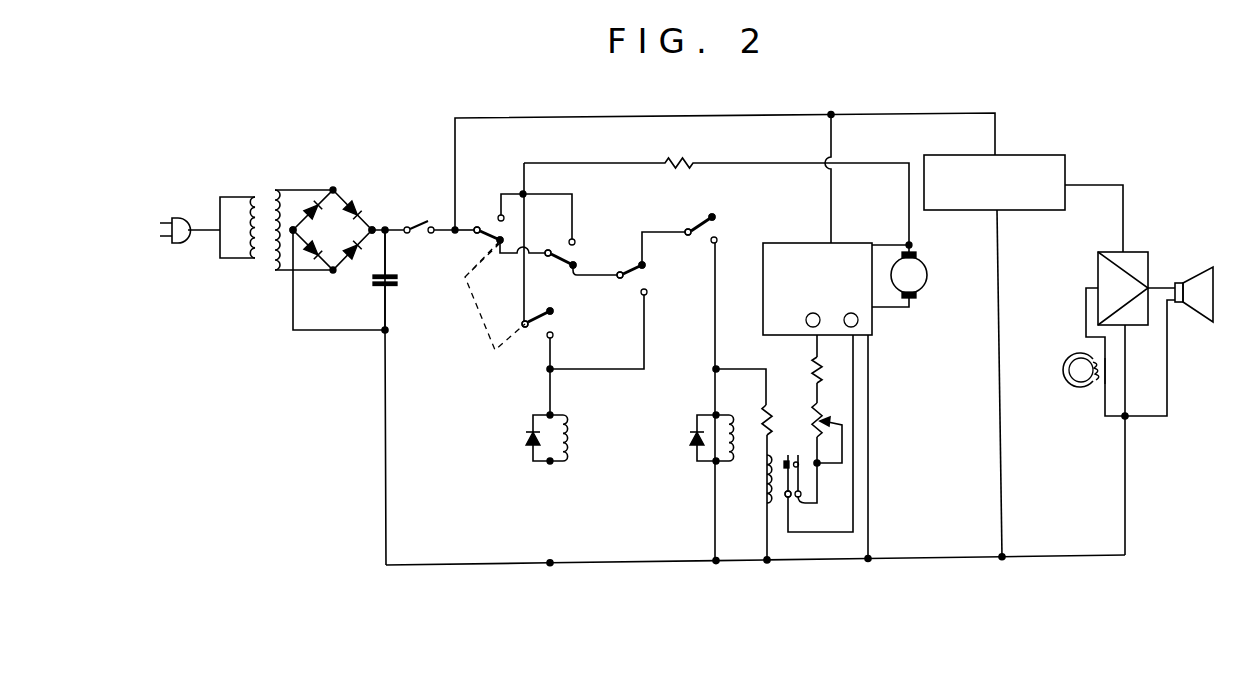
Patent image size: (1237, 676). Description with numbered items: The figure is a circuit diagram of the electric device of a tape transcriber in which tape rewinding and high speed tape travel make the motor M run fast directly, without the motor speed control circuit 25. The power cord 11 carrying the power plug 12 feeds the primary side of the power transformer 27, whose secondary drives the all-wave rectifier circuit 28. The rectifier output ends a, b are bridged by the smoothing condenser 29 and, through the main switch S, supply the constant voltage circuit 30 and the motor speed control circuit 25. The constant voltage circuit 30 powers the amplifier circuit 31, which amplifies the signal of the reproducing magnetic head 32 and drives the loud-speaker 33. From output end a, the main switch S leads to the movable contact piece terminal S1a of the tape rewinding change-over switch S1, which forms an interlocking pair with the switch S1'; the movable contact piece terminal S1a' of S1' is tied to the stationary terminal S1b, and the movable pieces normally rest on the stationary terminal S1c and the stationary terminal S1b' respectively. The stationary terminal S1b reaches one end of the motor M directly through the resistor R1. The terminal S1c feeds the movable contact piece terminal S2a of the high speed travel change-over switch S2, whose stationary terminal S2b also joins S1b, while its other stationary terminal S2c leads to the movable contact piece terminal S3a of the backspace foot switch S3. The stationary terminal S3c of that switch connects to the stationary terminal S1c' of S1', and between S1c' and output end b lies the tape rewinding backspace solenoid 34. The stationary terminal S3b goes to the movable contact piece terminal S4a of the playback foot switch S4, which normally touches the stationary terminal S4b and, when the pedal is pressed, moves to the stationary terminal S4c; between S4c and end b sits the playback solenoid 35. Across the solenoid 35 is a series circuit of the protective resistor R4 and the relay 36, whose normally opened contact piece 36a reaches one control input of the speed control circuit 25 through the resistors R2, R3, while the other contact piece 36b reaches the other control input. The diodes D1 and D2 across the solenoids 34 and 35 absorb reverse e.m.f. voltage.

The power cord 11 is at (196, 227).
The power plug 12 is at (176, 243).
The power transformer 27 is at (262, 194).
The all-wave rectifier circuit 28 is at (345, 189).
The output end a is at (375, 227).
The output end b is at (297, 231).
The smoothing condenser 29 is at (398, 287).
The main switch S is at (425, 221).
The tape rewinding operation change-over switch S1 is at (500, 248).
The movable contact piece terminal S1a is at (460, 244).
The stationary terminal S1b is at (508, 197).
The stationary terminal S1c is at (515, 258).
The interlocking switch S1' is at (496, 344).
The movable contact piece terminal S1a' is at (505, 314).
The stationary terminal S1b' is at (572, 309).
The stationary terminal S1c' is at (571, 333).
The tape high speed travel change-over switch S2 is at (575, 263).
The movable contact piece terminal S2a is at (548, 256).
The stationary terminal S2b is at (575, 240).
The stationary terminal S2c is at (576, 276).
The foot switch S3 is at (644, 266).
The movable contact piece terminal S3a is at (621, 278).
The stationary terminal S3b is at (650, 253).
The stationary terminal S3c is at (644, 292).
The foot switch S4 is at (715, 217).
The movable contact piece terminal S4a is at (686, 232).
The stationary terminal S4b is at (710, 215).
The stationary terminal S4c is at (717, 240).
The resistor R1 is at (683, 152).
The resistor R2 is at (819, 409).
The resistor R3 is at (819, 369).
The protective resistor R4 is at (771, 419).
The motor speed control circuit 25 is at (803, 240).
The motor M is at (909, 275).
The constant voltage circuit 30 is at (1001, 156).
The amplifier circuit 31 is at (1130, 252).
The reproducing magnetic head 32 is at (1088, 388).
The loud-speaker 33 is at (1191, 282).
The diode D1 is at (530, 440).
The diode D2 is at (690, 440).
The tape rewinding backspace solenoid 34 is at (568, 440).
The playback solenoid 35 is at (736, 415).
The relay 36 is at (765, 476).
The normally opened contact piece 36a is at (798, 502).
The contact piece 36b is at (786, 498).